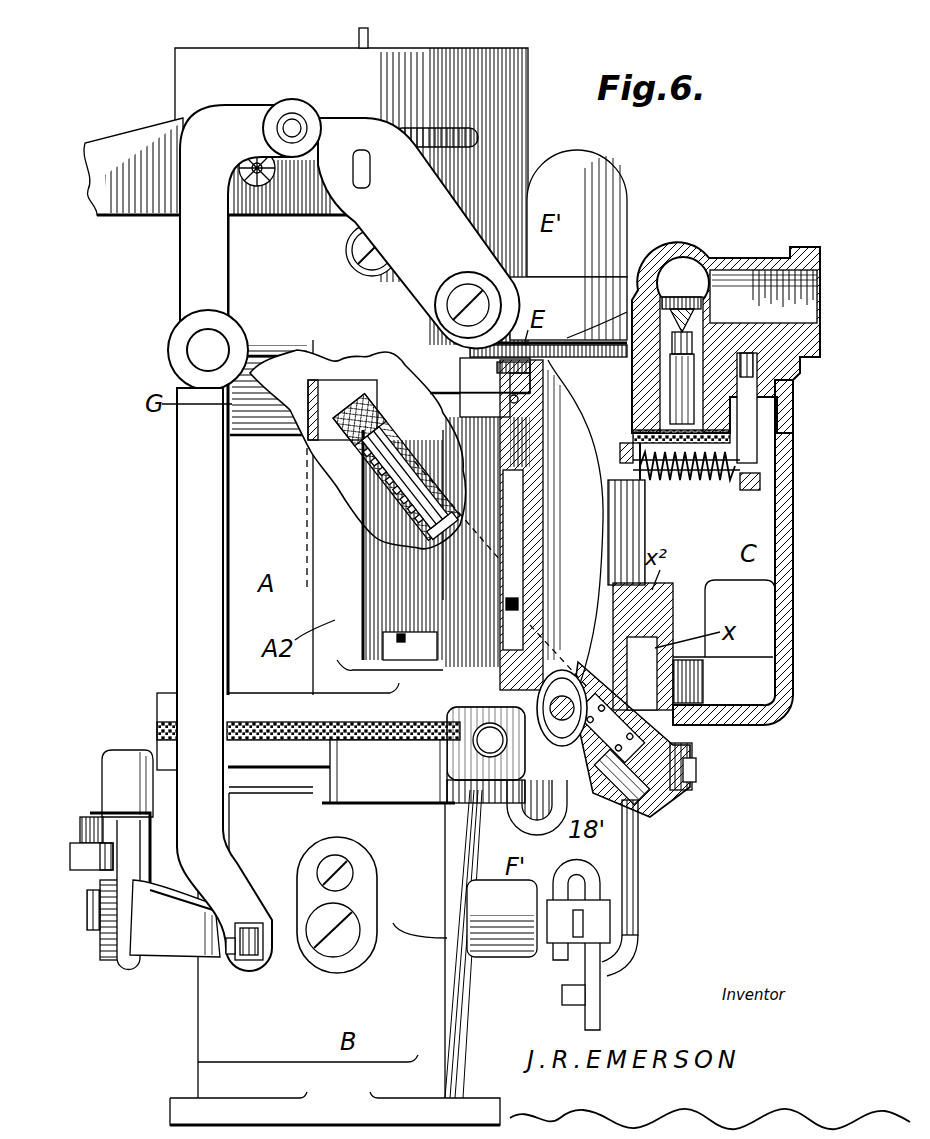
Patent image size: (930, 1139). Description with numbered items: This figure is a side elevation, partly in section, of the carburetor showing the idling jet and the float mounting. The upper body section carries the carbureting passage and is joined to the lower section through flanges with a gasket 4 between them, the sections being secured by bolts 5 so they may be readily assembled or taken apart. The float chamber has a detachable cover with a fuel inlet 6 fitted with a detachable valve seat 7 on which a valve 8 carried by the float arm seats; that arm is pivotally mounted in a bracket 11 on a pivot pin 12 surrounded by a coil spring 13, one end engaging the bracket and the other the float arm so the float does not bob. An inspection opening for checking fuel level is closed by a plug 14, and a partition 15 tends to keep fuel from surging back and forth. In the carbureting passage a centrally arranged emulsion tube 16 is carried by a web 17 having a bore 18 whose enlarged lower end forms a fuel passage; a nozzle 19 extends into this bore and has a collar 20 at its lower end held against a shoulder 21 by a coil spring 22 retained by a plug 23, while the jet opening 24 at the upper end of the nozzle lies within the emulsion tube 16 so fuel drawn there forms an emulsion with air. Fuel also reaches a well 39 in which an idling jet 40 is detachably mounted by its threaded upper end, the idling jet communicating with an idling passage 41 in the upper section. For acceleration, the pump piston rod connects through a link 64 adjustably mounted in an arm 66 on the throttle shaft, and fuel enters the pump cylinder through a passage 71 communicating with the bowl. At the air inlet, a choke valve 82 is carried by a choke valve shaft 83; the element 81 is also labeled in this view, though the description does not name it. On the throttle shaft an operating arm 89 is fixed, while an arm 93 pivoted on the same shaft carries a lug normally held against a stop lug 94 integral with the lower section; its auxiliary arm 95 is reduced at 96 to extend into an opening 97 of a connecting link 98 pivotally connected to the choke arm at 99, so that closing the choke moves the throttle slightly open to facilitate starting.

The gasket 4 is at (168, 728).
The bolts 5 is at (401, 634).
The fuel inlet 6 is at (764, 280).
The valve seat 7 is at (718, 292).
The valve 8 is at (688, 318).
The bracket 11 is at (758, 407).
The pivot pin 12 is at (752, 490).
The coil spring 13 is at (700, 480).
The plug 14 is at (648, 530).
The partition 15 is at (700, 618).
The emulsion tube 16 is at (300, 380).
The web 17 is at (413, 445).
The bore 18 is at (395, 388).
The nozzle 19 is at (395, 493).
The collar 20 is at (535, 702).
The shoulder 21 is at (667, 643).
The coil spring 22 is at (650, 700).
The plug 23 is at (692, 785).
The jet opening 24 is at (345, 422).
The well 39 is at (515, 608).
The idling jet 40 is at (522, 462).
The idling passage 41 is at (455, 385).
The link 64 is at (640, 855).
The arm 66 is at (600, 952).
The passage 71 is at (528, 800).
The link arm 81 is at (418, 233).
The choke valve 82 is at (359, 34).
The choke valve shaft 83 is at (362, 150).
The operating arm 89 is at (90, 862).
The arm 93 is at (92, 825).
The stop lug 94 is at (117, 762).
The auxiliary arm 95 is at (175, 918).
The reduced portion 96 is at (262, 960).
The opening 97 is at (230, 952).
The connecting link 98 is at (190, 527).
The pivotal connection 99 is at (292, 128).